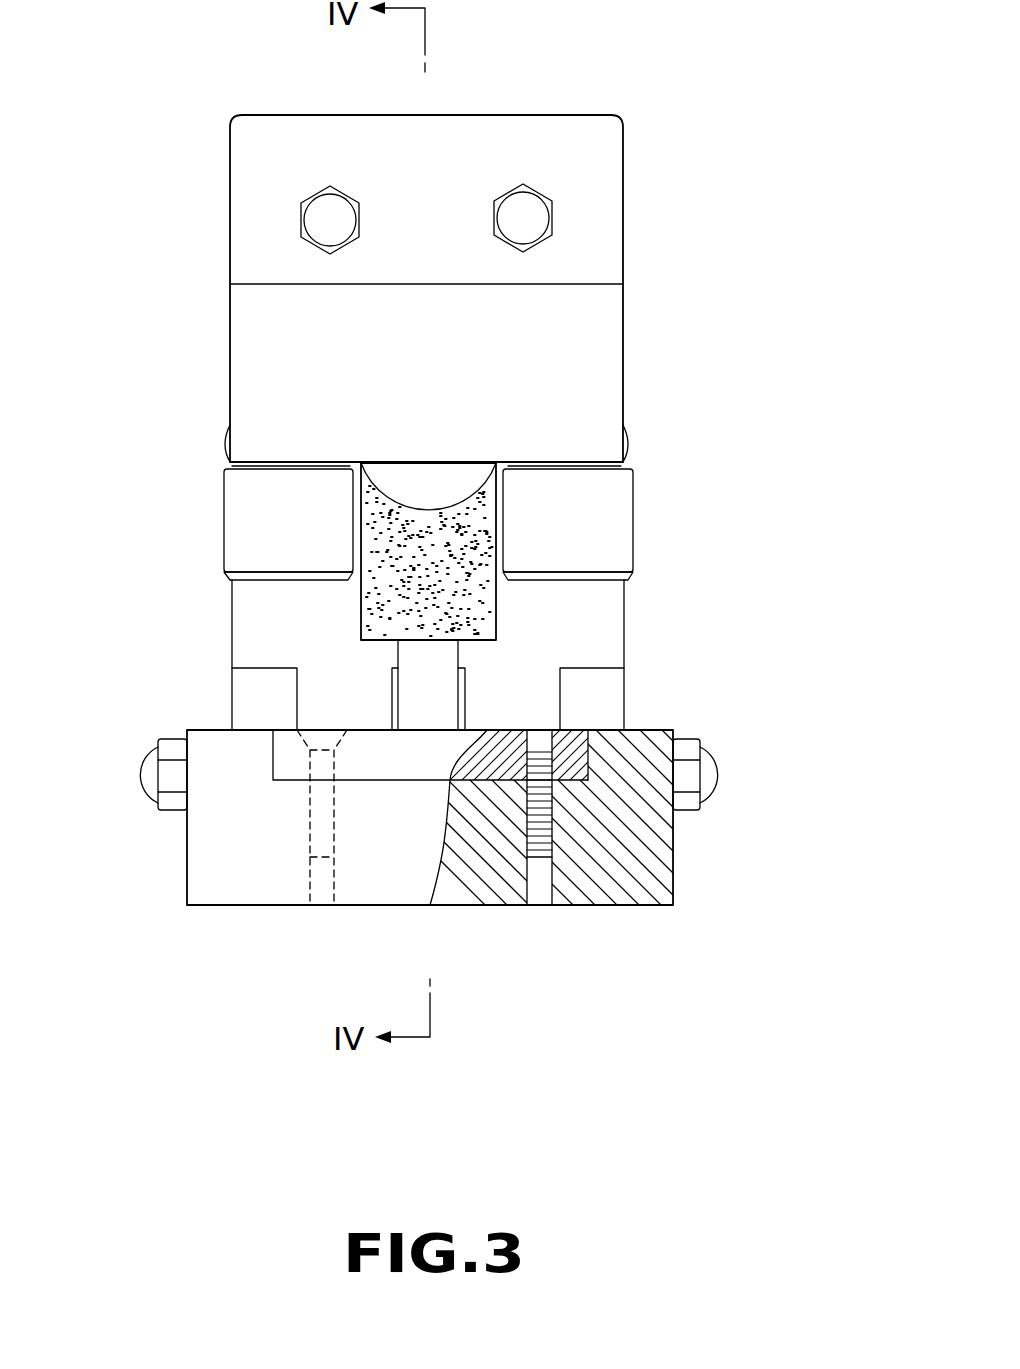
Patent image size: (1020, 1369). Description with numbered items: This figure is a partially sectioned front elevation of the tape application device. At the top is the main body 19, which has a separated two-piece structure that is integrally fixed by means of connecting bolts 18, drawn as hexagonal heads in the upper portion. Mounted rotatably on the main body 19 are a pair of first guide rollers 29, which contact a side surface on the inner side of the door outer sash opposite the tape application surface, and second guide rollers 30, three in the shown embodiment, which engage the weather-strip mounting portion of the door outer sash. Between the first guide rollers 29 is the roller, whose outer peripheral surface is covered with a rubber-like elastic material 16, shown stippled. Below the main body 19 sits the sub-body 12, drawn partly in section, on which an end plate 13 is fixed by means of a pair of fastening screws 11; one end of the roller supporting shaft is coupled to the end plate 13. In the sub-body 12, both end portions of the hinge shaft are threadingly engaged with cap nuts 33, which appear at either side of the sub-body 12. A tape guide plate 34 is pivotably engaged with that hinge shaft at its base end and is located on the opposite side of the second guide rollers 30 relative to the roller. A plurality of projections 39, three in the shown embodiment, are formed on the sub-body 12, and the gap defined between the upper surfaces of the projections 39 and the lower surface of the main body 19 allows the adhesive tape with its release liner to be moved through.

The fastening screw 11 is at (542, 905).
The sub-body 12 is at (670, 905).
The end plate 13 is at (285, 765).
The rubber-like elastic material 16 is at (400, 583).
The connecting bolt 18 is at (330, 208).
The main body 19 is at (553, 125).
The first guide roller 29 is at (228, 523).
The second guide roller 30 is at (226, 447).
The cap nut 33 is at (713, 770).
The tape guide plate 34 is at (627, 620).
The projection 39 is at (245, 695).